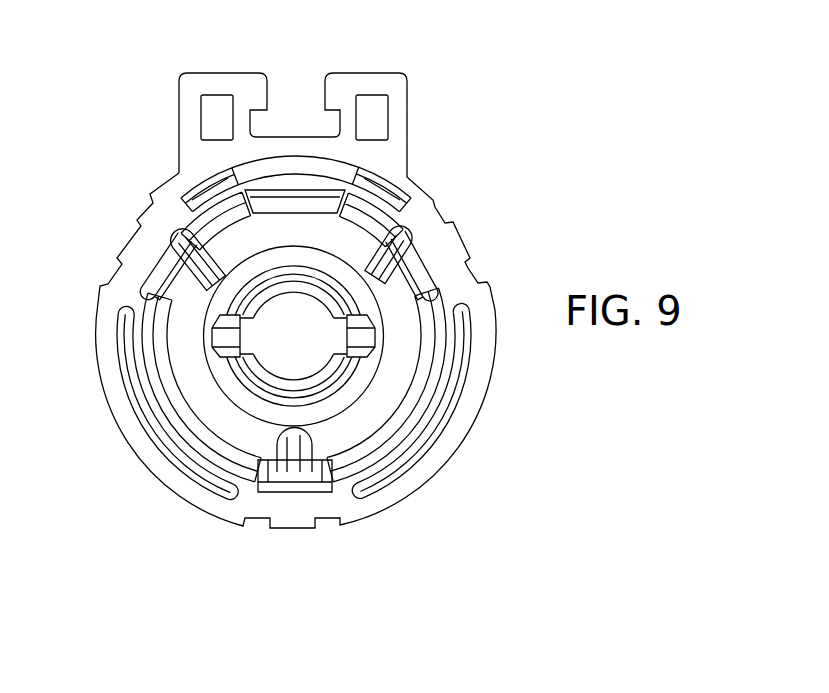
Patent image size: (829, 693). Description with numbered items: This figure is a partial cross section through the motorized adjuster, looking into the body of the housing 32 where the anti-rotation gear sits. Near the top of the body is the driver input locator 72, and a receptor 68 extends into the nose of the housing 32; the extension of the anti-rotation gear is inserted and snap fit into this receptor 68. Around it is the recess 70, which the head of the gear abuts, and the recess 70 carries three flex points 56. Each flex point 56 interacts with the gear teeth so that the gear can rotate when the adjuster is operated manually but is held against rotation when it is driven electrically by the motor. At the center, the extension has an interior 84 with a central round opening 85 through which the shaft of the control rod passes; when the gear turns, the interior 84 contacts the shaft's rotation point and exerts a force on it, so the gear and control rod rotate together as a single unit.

The housing 32 is at (474, 242).
The flex point 56 is at (196, 256).
The receptor 68 is at (329, 278).
The recess 70 is at (200, 393).
The driver input locator 72 is at (293, 167).
The interior 84 is at (308, 350).
The central round opening 85 is at (272, 307).